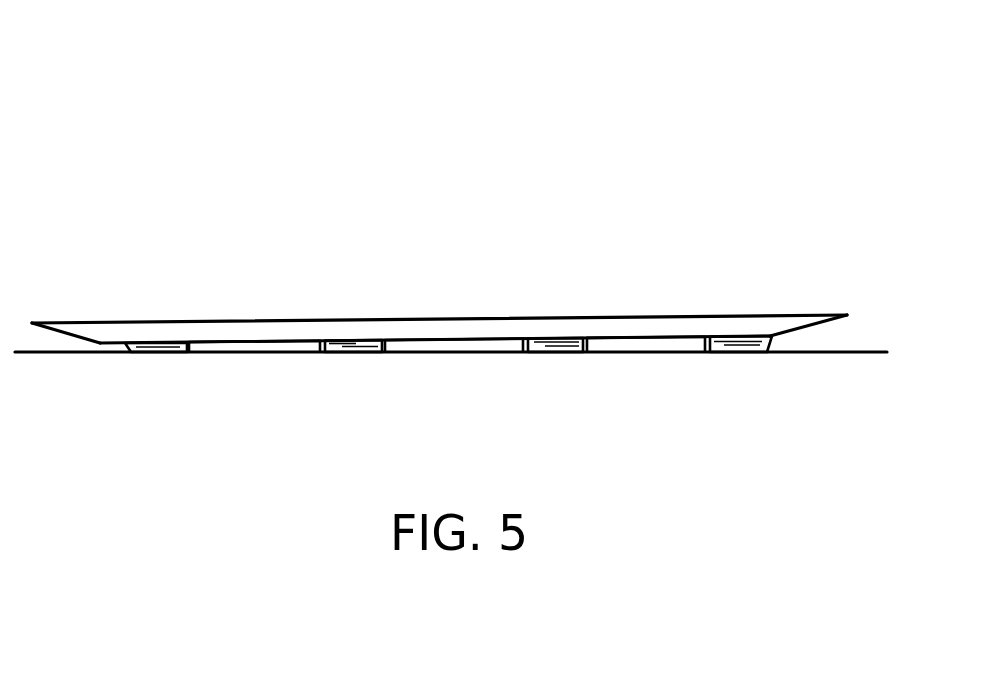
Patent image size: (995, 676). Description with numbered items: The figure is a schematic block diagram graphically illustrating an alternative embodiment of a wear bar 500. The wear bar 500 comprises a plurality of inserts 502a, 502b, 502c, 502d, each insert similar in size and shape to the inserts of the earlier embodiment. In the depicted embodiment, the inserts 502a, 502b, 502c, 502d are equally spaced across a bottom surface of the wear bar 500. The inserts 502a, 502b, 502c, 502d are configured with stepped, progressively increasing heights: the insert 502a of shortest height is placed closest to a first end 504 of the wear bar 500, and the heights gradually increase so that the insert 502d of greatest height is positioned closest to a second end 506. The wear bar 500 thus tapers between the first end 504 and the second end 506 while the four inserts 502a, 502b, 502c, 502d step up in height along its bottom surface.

The wear bar 500 is at (130, 93).
The insert 502a is at (162, 355).
The insert 502b is at (355, 355).
The insert 502c is at (558, 355).
The insert 502d is at (733, 355).
The first end 504 is at (76, 286).
The second end 506 is at (812, 286).